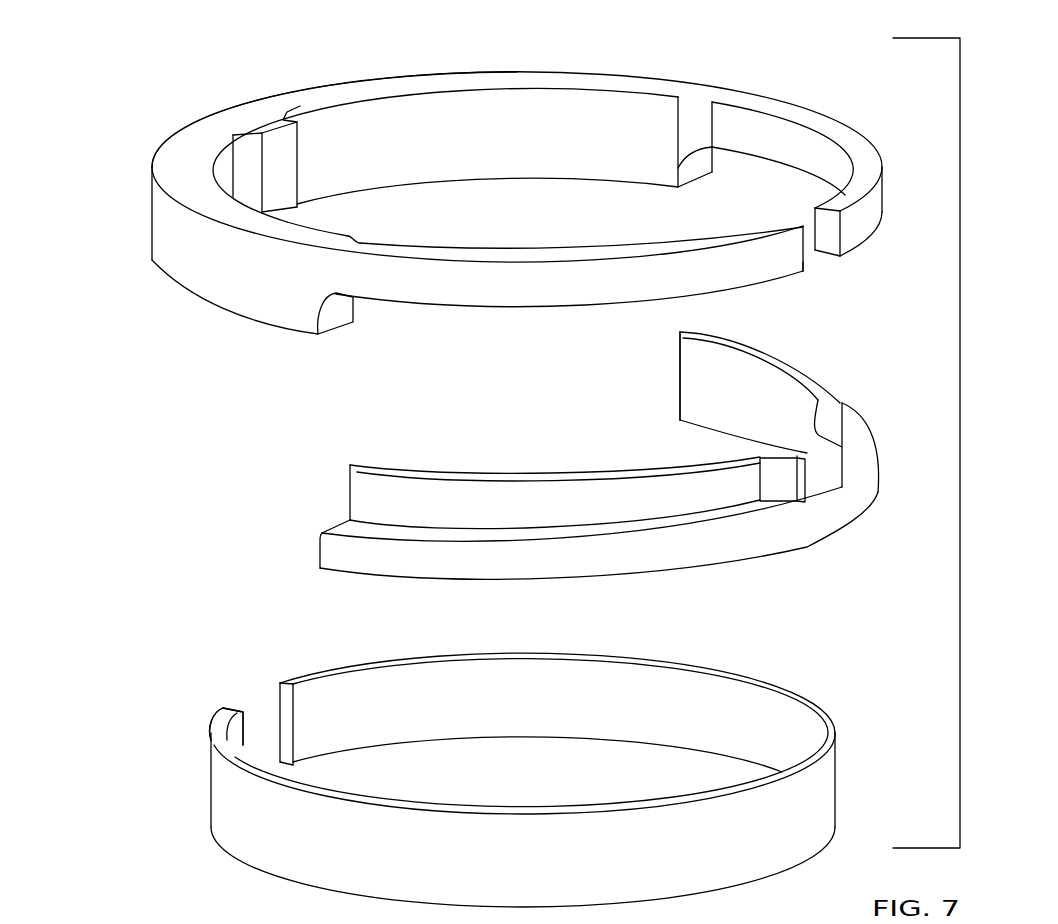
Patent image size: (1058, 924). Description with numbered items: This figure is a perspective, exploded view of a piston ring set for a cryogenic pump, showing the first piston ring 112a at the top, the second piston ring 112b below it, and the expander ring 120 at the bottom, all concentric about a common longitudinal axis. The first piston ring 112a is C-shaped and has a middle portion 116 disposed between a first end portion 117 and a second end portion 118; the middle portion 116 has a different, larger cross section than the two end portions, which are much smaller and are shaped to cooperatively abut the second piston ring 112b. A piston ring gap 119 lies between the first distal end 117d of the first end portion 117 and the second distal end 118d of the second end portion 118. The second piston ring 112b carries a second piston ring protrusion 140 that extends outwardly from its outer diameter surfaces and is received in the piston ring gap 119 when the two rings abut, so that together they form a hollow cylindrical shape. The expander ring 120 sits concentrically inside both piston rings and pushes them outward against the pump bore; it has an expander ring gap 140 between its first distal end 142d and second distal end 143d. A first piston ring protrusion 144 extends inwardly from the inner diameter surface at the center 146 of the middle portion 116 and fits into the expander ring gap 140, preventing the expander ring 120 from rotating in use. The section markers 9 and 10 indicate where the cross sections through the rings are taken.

The first piston ring 112a is at (111, 55).
The second piston ring 112b is at (284, 506).
The middle portion 116 is at (193, 132).
The first end portion 117 is at (855, 152).
The first distal end 117d is at (852, 235).
The second end portion 118 is at (583, 288).
The second distal end 118d is at (793, 262).
The piston ring gap 119 is at (817, 253).
The expander ring 120 is at (161, 702).
The second piston ring protrusion 140 is at (820, 475).
The first distal end 142d is at (245, 743).
The second distal end 143d is at (333, 698).
The first piston ring protrusion 144 is at (288, 152).
The center 146 is at (242, 112).
The section line 9 is at (428, 245).
The section line 10 is at (800, 347).